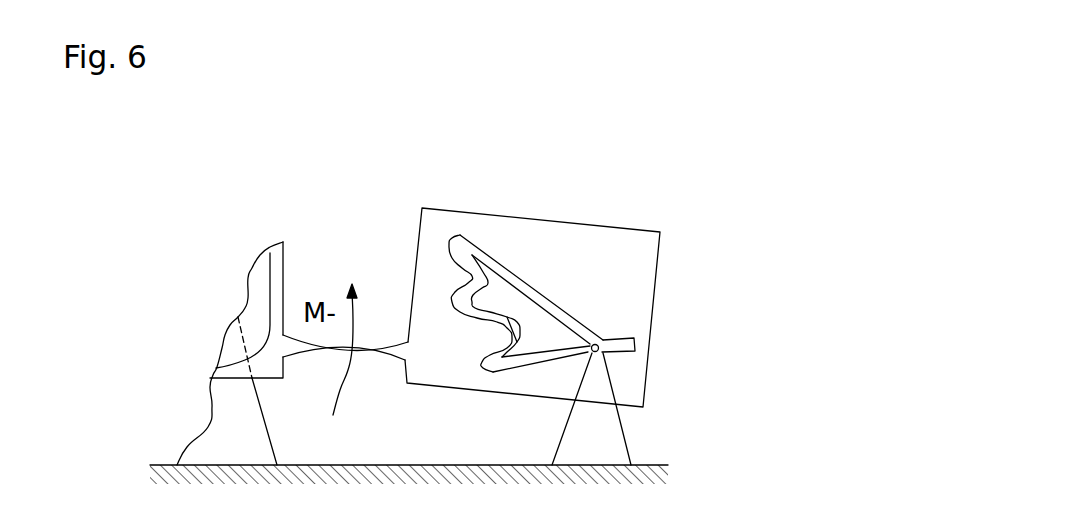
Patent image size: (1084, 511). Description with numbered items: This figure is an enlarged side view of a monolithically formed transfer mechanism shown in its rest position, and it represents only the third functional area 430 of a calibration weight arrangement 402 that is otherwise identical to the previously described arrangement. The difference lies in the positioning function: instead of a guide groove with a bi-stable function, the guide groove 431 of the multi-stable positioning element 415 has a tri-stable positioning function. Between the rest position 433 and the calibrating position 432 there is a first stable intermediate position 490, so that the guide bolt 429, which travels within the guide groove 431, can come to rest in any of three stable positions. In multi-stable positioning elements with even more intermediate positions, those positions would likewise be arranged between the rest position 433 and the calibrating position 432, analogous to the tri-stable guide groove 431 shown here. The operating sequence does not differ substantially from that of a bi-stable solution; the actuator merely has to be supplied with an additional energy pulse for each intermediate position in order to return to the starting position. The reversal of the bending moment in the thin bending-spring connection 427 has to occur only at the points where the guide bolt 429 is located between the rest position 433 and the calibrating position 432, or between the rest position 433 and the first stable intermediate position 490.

The calibration weight arrangement 402 is at (262, 221).
The thin bending-spring connection 427 is at (367, 350).
The third functional area 430 is at (600, 262).
The guide groove 431 is at (567, 312).
The calibrating position 432 is at (482, 287).
The first stable intermediate position 490 is at (515, 330).
The guide bolt 429 is at (599, 351).
The rest position 433 is at (608, 342).
The multi-stable positioning element 415 is at (718, 357).